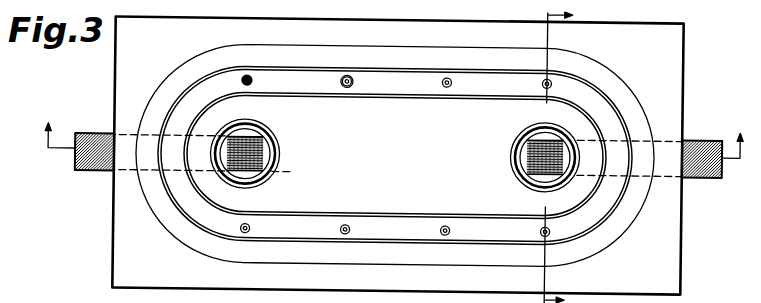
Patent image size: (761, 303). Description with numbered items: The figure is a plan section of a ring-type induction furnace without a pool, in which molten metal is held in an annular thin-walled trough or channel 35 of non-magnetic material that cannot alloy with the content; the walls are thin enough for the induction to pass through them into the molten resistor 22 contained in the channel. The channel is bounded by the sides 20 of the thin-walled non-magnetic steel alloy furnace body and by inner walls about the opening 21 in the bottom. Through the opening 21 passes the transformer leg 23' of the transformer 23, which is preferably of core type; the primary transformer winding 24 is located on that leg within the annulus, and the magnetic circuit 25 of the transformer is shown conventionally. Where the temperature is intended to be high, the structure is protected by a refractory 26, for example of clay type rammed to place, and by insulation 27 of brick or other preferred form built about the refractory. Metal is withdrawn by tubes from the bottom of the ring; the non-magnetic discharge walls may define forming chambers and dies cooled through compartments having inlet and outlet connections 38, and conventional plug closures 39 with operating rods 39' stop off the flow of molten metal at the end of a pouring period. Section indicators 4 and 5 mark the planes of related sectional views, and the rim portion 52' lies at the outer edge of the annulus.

The sides 20 is at (382, 214).
The opening 21 is at (247, 119).
The molten resistor 22 is at (590, 210).
The transformer 23 is at (374, 170).
The transformer leg 23' is at (395, 171).
The primary transformer winding 24 is at (271, 165).
The magnetic circuit 25 is at (78, 168).
The refractory 26 is at (163, 212).
The insulation 27 is at (147, 265).
The annular trough 35 is at (391, 80).
The inlet and outlet connections 38 is at (346, 87).
The plug closure 39 is at (365, 149).
The operating rod 39' is at (438, 125).
The outer rim 52' is at (455, 156).
The section line 4 is at (396, 131).
The section line 5 is at (566, 153).